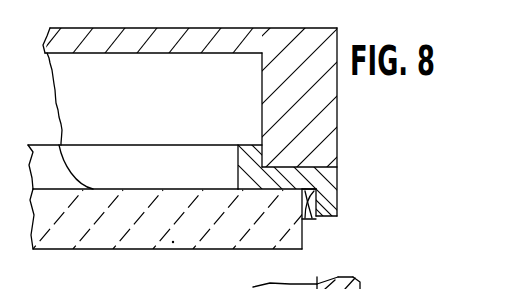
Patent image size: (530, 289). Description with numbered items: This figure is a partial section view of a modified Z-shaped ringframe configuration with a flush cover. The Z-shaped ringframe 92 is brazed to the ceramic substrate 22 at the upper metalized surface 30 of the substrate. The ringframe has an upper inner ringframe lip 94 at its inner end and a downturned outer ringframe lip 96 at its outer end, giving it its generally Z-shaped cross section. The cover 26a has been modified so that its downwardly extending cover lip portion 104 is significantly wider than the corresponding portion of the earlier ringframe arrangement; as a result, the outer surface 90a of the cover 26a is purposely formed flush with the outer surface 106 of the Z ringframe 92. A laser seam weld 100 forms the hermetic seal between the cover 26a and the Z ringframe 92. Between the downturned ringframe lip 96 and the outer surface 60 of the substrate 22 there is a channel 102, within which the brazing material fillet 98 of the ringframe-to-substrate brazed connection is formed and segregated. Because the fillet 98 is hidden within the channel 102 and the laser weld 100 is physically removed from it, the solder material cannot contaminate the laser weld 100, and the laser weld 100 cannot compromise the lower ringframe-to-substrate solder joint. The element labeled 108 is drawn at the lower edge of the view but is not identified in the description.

The ceramic substrate 22 is at (133, 243).
The cover 26a is at (167, 38).
The upper metalized surface 30 is at (57, 145).
The outer surface of substrate 60 is at (305, 240).
The outer surface of cover 90a is at (340, 88).
The Z-shaped ringframe 92 is at (232, 162).
The upper inner ringframe lip 94 is at (259, 143).
The downturned outer ringframe lip 96 is at (341, 196).
The brazing material fillet 98 is at (308, 220).
The laser weld 100 is at (339, 166).
The channel 102 is at (305, 233).
The downwardly extending cover lip portion 104 is at (340, 46).
The outer surface of Z ringframe 106 is at (340, 185).
The trim member 108 is at (227, 287).